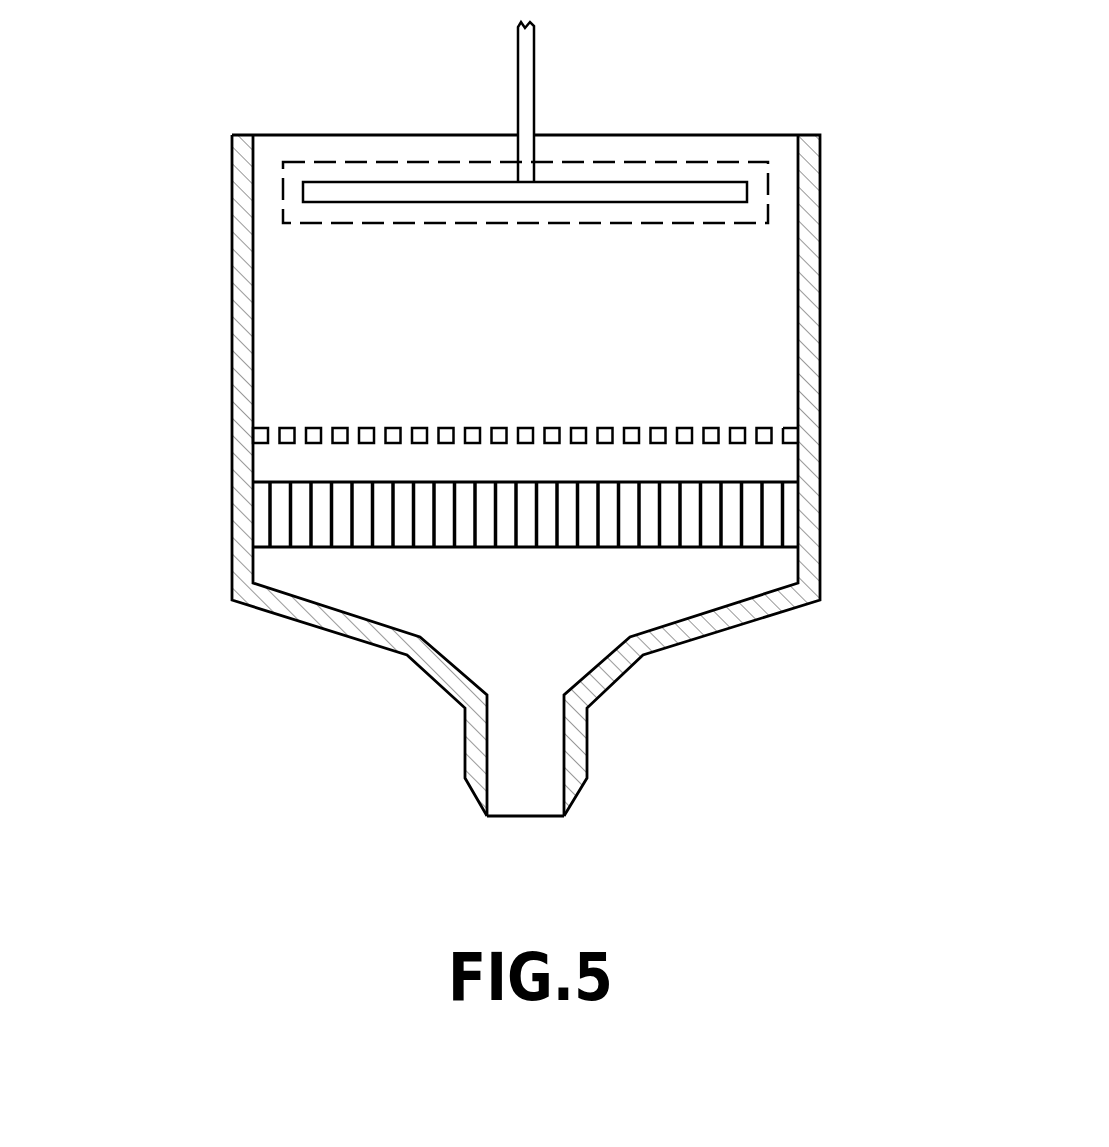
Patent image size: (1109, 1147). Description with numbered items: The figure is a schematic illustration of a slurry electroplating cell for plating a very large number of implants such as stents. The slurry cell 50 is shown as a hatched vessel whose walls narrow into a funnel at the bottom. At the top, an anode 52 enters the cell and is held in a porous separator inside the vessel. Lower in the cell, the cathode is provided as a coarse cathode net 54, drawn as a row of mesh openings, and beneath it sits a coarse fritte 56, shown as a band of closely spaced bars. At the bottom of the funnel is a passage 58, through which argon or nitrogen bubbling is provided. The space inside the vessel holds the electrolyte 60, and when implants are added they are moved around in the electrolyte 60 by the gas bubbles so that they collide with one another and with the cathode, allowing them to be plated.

The slurry cell 50 is at (232, 363).
The anode 52 is at (534, 82).
The coarse cathode net 54 is at (763, 443).
The coarse fritte 56 is at (743, 535).
The passage 58 is at (572, 803).
The electrolyte 60 is at (682, 332).